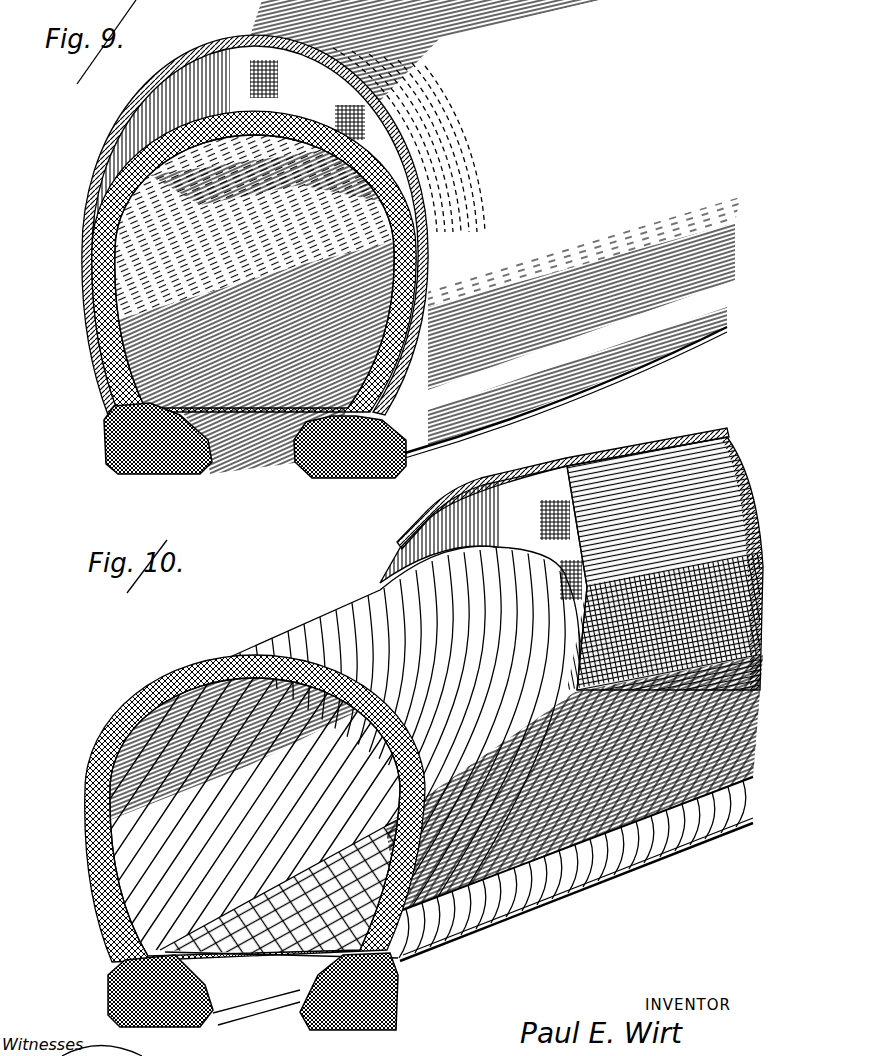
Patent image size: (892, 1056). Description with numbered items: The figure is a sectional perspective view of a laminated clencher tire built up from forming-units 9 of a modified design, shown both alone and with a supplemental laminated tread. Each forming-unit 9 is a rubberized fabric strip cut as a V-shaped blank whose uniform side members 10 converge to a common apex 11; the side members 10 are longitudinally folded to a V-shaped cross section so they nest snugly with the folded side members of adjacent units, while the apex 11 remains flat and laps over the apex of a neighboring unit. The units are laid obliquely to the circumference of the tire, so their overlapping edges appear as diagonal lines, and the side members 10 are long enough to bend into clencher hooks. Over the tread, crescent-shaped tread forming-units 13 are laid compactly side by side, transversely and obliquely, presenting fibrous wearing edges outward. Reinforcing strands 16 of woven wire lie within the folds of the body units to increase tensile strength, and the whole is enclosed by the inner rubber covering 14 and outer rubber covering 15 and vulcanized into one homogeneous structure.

In FIG. 9, the forming-unit 9 is at (152, 182).
In FIG. 10, the forming-unit 9 is at (140, 693).
In FIG. 10, the side members 10 is at (243, 647).
In FIG. 10, the apex 11 is at (343, 600).
In FIG. 9, the tread forming-unit 13 is at (480, 152).
In FIG. 10, the tread forming-unit 13 is at (649, 466).
In FIG. 9, the inner rubber covering 14 is at (122, 272).
In FIG. 9, the outer rubber covering 15 is at (430, 240).
In FIG. 10, the outer rubber covering 15 is at (468, 500).
In FIG. 9, the reinforcing strands 16 is at (330, 160).
In FIG. 10, the reinforcing strands 16 is at (173, 673).